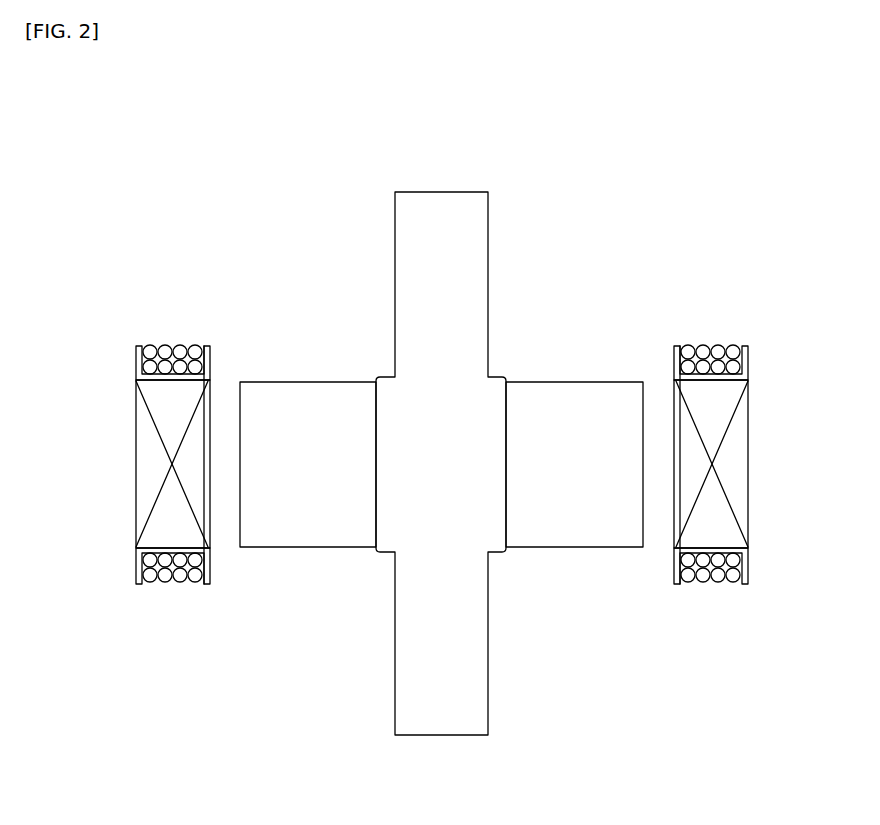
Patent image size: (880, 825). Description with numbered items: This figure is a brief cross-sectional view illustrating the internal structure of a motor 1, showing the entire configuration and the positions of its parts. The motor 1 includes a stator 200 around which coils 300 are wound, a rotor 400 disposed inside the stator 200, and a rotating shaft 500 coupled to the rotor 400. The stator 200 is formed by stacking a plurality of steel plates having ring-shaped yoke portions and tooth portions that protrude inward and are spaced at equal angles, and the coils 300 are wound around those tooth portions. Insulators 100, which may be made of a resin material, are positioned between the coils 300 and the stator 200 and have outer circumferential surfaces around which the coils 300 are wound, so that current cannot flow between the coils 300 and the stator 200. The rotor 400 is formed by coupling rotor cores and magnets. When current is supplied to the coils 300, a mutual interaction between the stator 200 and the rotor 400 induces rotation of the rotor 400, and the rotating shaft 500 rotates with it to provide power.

The motor 1 is at (56, 161).
The insulator 100 is at (136, 360).
The stator 200 is at (136, 462).
The coil 300 is at (183, 345).
The rotor 400 is at (305, 548).
The rotating shaft 500 is at (440, 191).